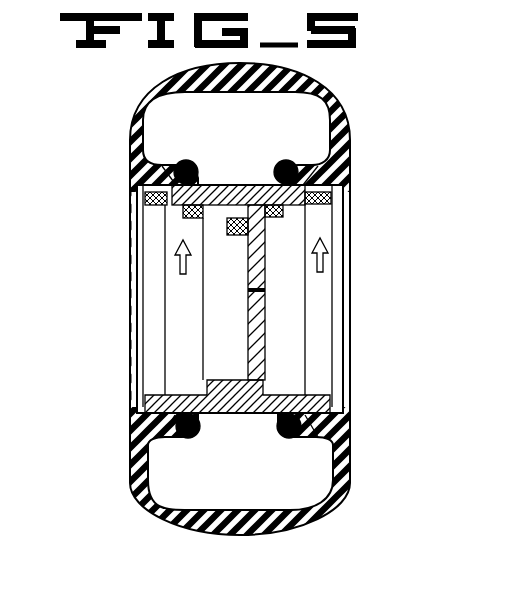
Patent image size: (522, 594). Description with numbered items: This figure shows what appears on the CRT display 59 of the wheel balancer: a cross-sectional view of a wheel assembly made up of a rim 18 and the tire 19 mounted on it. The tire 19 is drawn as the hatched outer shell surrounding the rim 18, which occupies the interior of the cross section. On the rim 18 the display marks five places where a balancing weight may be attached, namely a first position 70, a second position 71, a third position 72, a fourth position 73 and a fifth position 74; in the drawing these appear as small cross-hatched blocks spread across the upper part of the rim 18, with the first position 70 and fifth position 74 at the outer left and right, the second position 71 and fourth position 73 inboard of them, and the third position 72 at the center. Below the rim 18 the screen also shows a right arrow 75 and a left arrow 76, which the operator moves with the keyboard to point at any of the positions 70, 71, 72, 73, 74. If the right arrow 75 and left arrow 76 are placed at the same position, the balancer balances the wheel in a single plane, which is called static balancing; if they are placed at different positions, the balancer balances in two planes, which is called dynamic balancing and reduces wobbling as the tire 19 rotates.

The CRT display 59 is at (352, 115).
The tire 19 is at (142, 110).
The rim 18 is at (137, 187).
The first position 70 is at (145, 203).
The fifth position 74 is at (333, 203).
The second position 71 is at (203, 219).
The third position 72 is at (227, 231).
The fourth position 73 is at (287, 218).
The right arrow 75 is at (327, 268).
The left arrow 76 is at (183, 274).